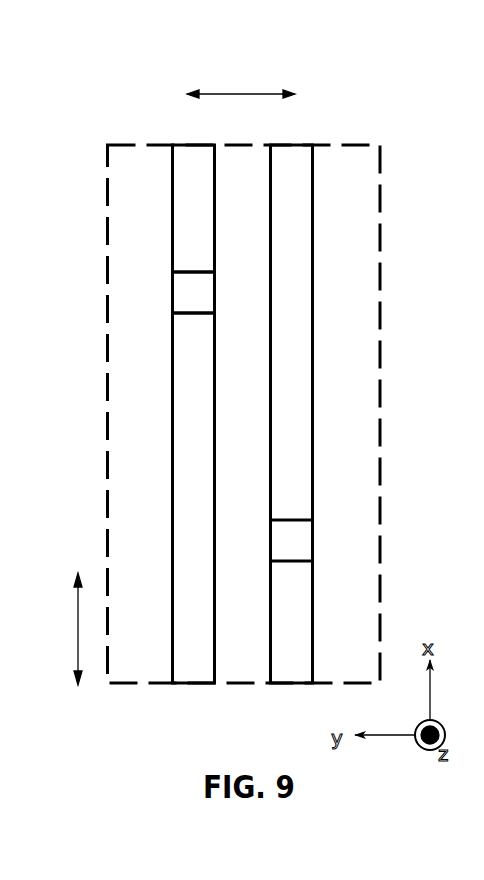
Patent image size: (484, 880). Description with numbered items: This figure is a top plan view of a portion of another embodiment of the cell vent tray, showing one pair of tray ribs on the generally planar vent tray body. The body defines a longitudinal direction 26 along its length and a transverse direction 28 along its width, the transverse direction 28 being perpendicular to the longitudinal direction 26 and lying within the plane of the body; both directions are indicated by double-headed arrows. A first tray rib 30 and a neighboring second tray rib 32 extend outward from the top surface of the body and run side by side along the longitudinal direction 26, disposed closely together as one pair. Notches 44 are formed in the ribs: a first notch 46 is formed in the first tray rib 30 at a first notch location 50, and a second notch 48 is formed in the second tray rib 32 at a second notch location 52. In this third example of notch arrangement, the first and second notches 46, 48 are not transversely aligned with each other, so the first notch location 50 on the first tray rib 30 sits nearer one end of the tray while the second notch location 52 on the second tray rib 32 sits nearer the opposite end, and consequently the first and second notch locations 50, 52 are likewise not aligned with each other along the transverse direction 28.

The longitudinal direction 26 is at (78, 615).
The transverse direction 28 is at (220, 94).
The first tray rib 30 is at (193, 197).
The second tray rib 32 is at (292, 197).
The notch 44 is at (193, 282).
The first notch 46 is at (194, 292).
The second notch 48 is at (292, 528).
The first notch location 50 is at (155, 314).
The second notch location 52 is at (332, 560).